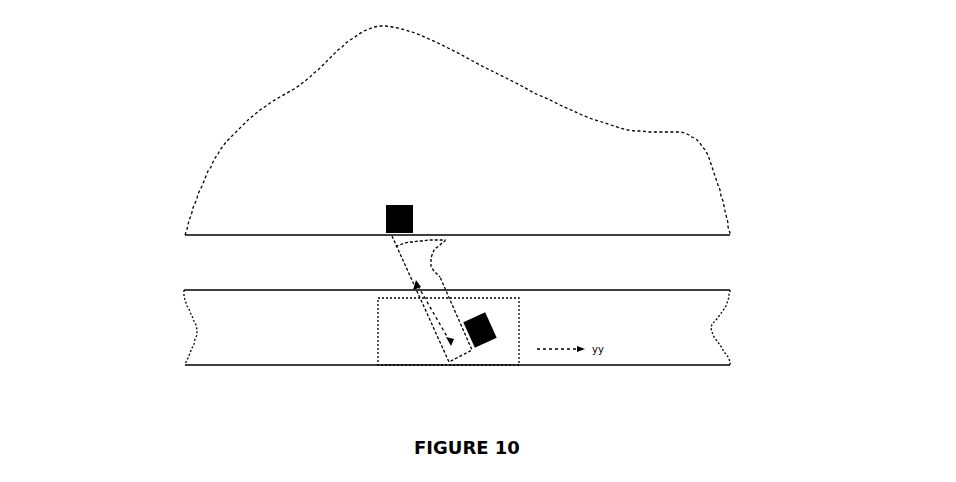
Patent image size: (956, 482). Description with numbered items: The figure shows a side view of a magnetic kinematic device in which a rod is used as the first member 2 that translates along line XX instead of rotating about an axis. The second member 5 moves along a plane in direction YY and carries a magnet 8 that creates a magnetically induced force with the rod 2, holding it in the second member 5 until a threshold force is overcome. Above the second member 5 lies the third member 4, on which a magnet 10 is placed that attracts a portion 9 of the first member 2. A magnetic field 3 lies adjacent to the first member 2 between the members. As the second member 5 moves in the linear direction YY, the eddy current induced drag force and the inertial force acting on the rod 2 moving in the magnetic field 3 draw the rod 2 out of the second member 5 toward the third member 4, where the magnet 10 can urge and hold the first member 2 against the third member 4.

The third member 4 is at (283, 120).
The magnet 10 is at (398, 205).
The portion of the first member 9 is at (383, 215).
The magnetic field 3 is at (305, 254).
The first member 2 is at (405, 270).
The second member 5 is at (397, 346).
The magnet 8 is at (498, 329).